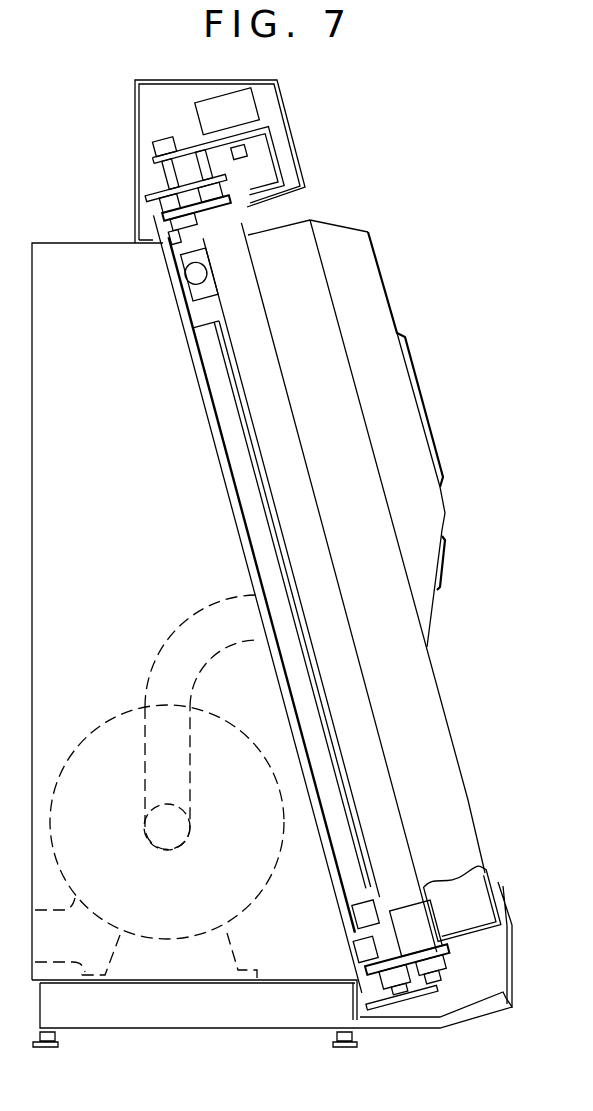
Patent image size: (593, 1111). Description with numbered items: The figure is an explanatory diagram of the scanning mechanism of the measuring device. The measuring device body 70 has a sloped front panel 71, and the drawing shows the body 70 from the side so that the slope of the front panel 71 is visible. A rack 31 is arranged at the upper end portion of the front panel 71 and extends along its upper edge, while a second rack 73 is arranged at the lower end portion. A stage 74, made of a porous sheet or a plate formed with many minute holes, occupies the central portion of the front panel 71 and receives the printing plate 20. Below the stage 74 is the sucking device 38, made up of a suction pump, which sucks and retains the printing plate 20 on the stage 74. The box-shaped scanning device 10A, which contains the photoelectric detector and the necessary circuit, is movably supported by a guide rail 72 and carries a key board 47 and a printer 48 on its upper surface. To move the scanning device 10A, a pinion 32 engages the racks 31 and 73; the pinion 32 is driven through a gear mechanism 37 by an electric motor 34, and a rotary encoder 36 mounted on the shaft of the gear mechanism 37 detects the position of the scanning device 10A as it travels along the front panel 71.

The scanning device 10A is at (438, 725).
The printing plate 20 is at (268, 508).
The rack 31 is at (178, 248).
The pinion 32 is at (190, 222).
The electric motor 34 is at (258, 112).
The rotary encoder 36 is at (152, 148).
The gear mechanism 37 is at (230, 172).
The sucking device 38 is at (115, 717).
The key board 47 is at (430, 427).
The printer 48 is at (447, 559).
The measuring device body 70 is at (200, 1030).
The front panel 71 is at (222, 462).
The guide rail 72 is at (196, 270).
The rack 73 is at (362, 950).
The stage 74 is at (353, 828).